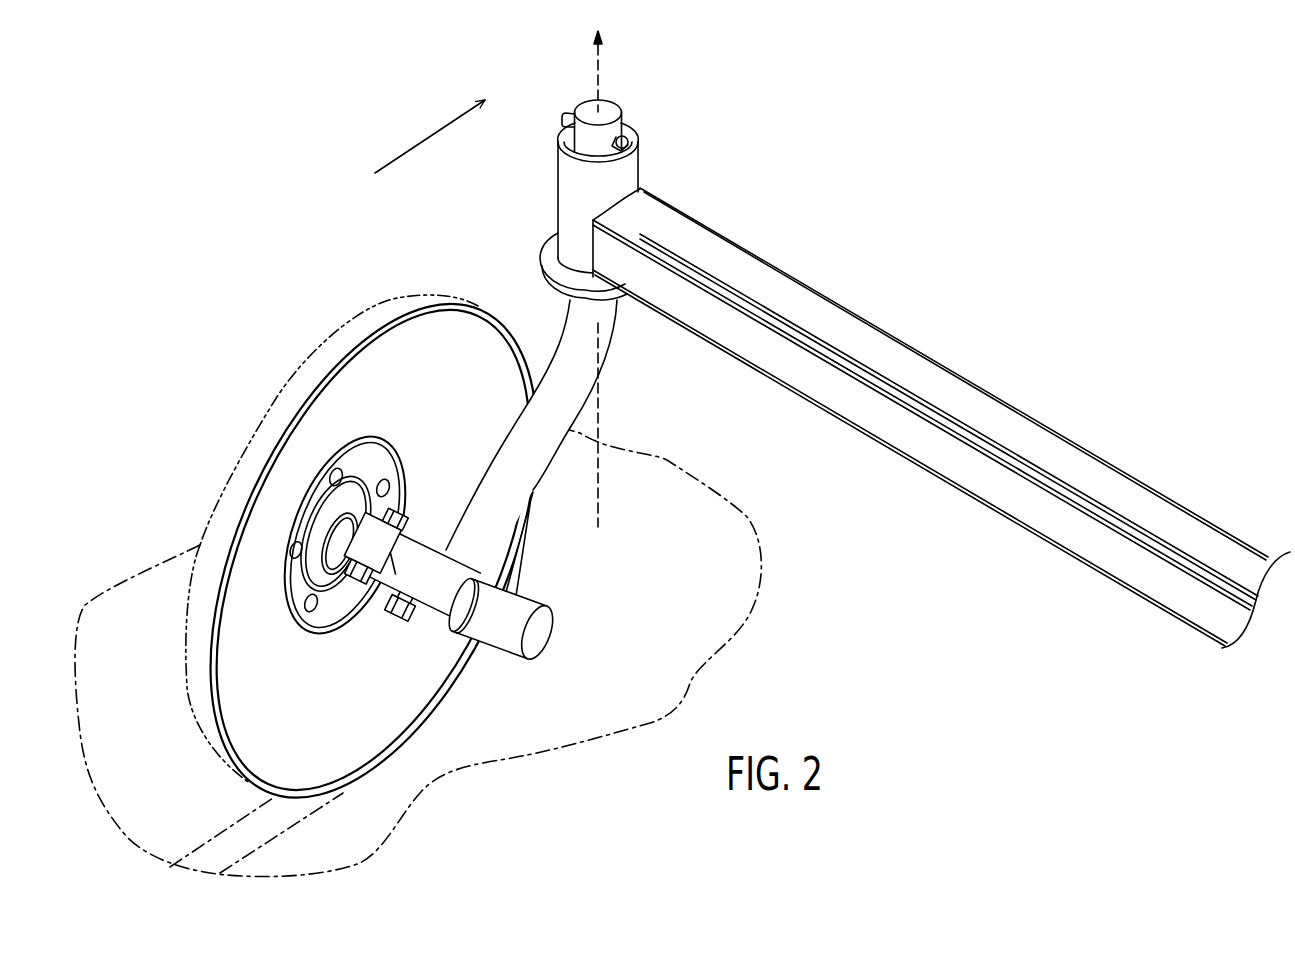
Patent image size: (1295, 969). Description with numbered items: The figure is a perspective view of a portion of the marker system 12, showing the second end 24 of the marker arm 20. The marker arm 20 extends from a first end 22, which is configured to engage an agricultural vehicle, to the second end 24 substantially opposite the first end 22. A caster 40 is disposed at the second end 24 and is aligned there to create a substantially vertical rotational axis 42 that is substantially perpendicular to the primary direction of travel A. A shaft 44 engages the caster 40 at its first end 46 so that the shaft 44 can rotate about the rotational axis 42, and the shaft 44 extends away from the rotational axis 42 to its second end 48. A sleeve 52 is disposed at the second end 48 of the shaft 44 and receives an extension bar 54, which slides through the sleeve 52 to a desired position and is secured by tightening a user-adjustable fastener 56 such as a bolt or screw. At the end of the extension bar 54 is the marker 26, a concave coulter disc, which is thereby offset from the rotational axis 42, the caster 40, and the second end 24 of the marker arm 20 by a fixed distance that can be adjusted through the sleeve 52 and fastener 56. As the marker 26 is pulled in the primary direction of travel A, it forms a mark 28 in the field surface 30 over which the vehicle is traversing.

The marker system 12 is at (748, 187).
The marker arm 20 is at (908, 463).
The first end 22 is at (1190, 640).
The second end 24 is at (631, 351).
The marker 26 is at (446, 408).
The mark 28 is at (257, 831).
The field surface 30 is at (666, 676).
The caster 40 is at (570, 197).
The rotational axis 42 is at (602, 70).
The shaft 44 is at (540, 443).
The first end 46 is at (563, 322).
The second end 48 is at (516, 554).
The sleeve 52 is at (436, 565).
The extension bar 54 is at (537, 640).
The user-adjustable fastener 56 is at (380, 622).
The primary direction of travel A is at (425, 138).